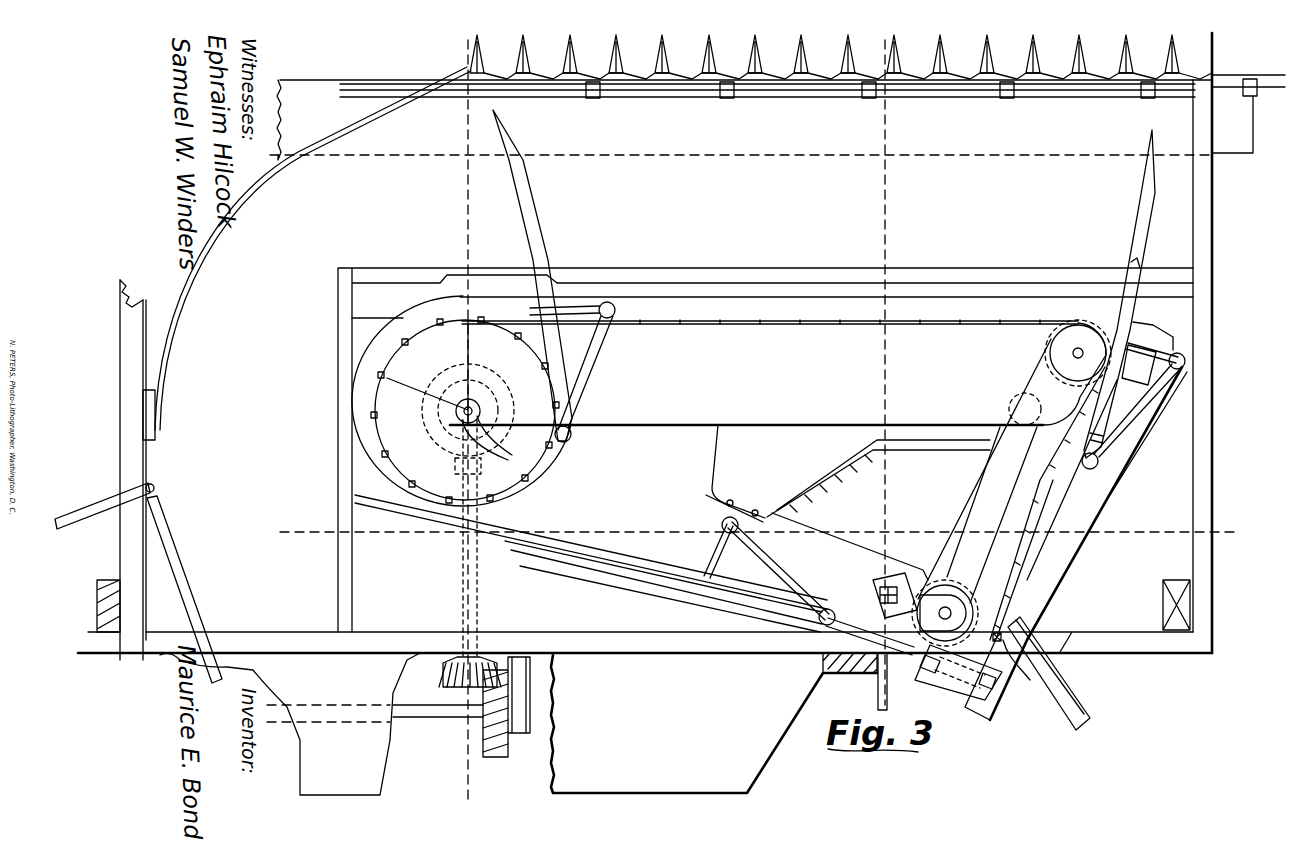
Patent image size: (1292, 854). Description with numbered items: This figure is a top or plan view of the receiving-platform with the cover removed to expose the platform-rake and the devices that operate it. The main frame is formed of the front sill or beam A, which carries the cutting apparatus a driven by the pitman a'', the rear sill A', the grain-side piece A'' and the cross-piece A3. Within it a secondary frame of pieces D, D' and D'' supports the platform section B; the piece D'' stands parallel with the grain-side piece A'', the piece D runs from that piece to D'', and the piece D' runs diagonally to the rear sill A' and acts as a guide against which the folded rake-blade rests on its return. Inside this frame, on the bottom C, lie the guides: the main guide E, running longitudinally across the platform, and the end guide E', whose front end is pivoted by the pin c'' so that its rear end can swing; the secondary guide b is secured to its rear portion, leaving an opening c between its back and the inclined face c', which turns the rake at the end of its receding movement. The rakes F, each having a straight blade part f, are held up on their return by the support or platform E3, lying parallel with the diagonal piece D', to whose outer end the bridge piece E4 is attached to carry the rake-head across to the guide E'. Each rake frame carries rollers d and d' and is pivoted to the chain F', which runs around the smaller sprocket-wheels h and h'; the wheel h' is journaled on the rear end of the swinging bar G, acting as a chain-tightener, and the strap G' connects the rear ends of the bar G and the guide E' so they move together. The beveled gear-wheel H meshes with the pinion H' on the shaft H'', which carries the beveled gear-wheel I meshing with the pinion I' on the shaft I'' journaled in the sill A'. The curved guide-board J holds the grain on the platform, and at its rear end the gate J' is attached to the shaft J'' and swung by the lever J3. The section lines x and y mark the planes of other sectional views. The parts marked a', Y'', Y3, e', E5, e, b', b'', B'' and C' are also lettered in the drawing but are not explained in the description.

The section line x x is at (461, 417).
The section line y y is at (756, 536).
The cutting apparatus a is at (841, 57).
The tooth bar sockets a' is at (767, 80).
The pitman a'' is at (746, 399).
The front sill or beam A is at (781, 117).
The rear sill A' is at (645, 643).
The grain-side piece A'' is at (1188, 343).
The cross-piece A3 is at (113, 481).
The bearing block Y'' is at (95, 606).
The bearing block Y3 is at (855, 681).
The secondary-frame piece D is at (765, 449).
The diagonal secondary-frame piece D' is at (591, 552).
The secondary-frame piece D'' is at (443, 401).
The curved guide-board J is at (313, 248).
The board or gate J' is at (184, 589).
The shaft J'' is at (164, 441).
The arm or lever J3 is at (102, 506).
The beveled gear-wheel H is at (465, 410).
The pinion H' is at (478, 410).
The shaft H'' is at (463, 540).
The crank arm e' is at (493, 442).
The main guide E is at (778, 373).
The end guide E' is at (1011, 489).
The support or platform E3 is at (700, 473).
The bridge piece E4 is at (855, 565).
The chute E5 is at (878, 478).
The rake F is at (824, 371).
The chain F' is at (785, 313).
The straight blade part f is at (1131, 270).
The swinging bar G is at (992, 515).
The strap G' is at (914, 685).
The sprocket-wheel h is at (1078, 353).
The sprocket-wheel h' is at (945, 601).
The roller d is at (841, 525).
The roller d' is at (876, 461).
The link rod e is at (1152, 335).
The opening c is at (1069, 502).
The inclined face c' is at (1076, 543).
The pin c'' is at (1139, 365).
The secondary guide b is at (1049, 673).
The arm edge b' is at (1050, 672).
The arm pivot b'' is at (1006, 649).
The receiving-platform section B is at (538, 297).
The base casing B'' is at (518, 724).
The bottom C is at (1147, 546).
The compartment C' is at (897, 504).
The beveled gear-wheel I is at (464, 673).
The pinion I' is at (506, 718).
The shaft I'' is at (375, 724).